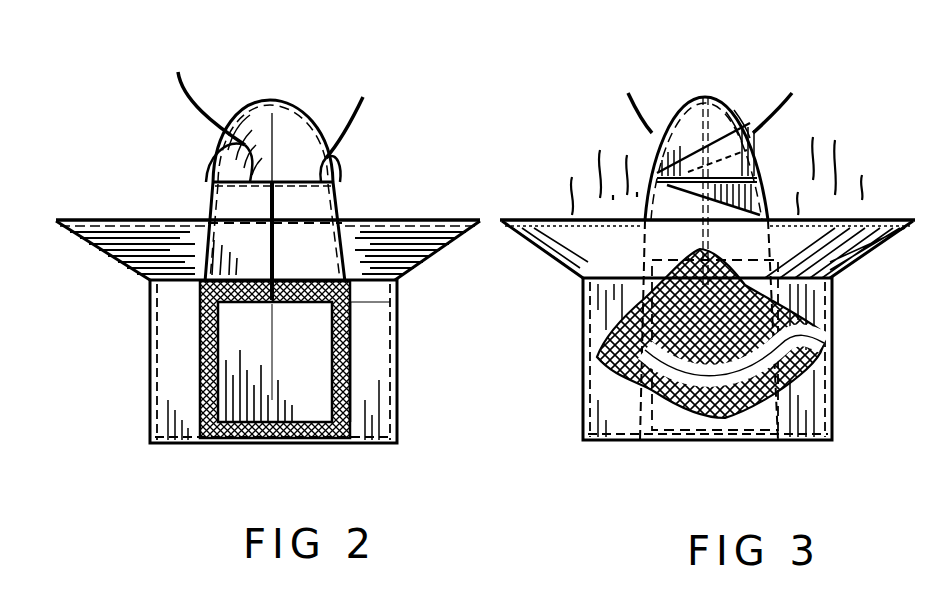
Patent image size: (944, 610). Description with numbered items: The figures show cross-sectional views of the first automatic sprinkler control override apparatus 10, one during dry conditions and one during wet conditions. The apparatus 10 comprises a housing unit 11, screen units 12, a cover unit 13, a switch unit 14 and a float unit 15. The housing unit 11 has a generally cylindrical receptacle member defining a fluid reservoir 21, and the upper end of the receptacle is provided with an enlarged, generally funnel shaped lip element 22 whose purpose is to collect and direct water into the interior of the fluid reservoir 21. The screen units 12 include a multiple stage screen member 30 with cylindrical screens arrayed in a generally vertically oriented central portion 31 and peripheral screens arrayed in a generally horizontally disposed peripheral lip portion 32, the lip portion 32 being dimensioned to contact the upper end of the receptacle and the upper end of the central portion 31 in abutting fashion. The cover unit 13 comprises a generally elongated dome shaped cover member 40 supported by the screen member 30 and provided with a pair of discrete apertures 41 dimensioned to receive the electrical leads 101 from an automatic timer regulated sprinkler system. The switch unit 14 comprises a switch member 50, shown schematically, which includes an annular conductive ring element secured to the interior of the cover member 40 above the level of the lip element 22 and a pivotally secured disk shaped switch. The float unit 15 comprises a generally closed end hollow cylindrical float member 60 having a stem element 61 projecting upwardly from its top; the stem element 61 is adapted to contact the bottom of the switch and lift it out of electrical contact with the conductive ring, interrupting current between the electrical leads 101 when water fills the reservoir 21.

In FIG. 2, the first automatic sprinkler control override apparatus 10 is at (140, 160).
In FIG. 2, the housing unit 11 is at (101, 372).
In FIG. 2, the screen units 12 is at (367, 342).
In FIG. 2, the cover unit 13 is at (347, 200).
In FIG. 2, the switch unit 14 is at (281, 172).
In FIG. 2, the float unit 15 is at (230, 445).
In FIG. 2, the fluid reservoir 21 is at (182, 336).
In FIG. 2, the lip element 22 is at (442, 220).
In FIG. 3, the lip element 22 is at (606, 254).
In FIG. 2, the screen member 30 is at (362, 374).
In FIG. 2, the central portion 31 is at (353, 318).
In FIG. 2, the peripheral lip portion 32 is at (365, 282).
In FIG. 3, the cover member 40 is at (696, 105).
In FIG. 2, the apertures 41 is at (222, 147).
In FIG. 2, the switch member 50 is at (259, 196).
In FIG. 2, the float member 60 is at (304, 367).
In FIG. 2, the stem element 61 is at (276, 253).
In FIG. 2, the electrical leads 101 is at (200, 95).